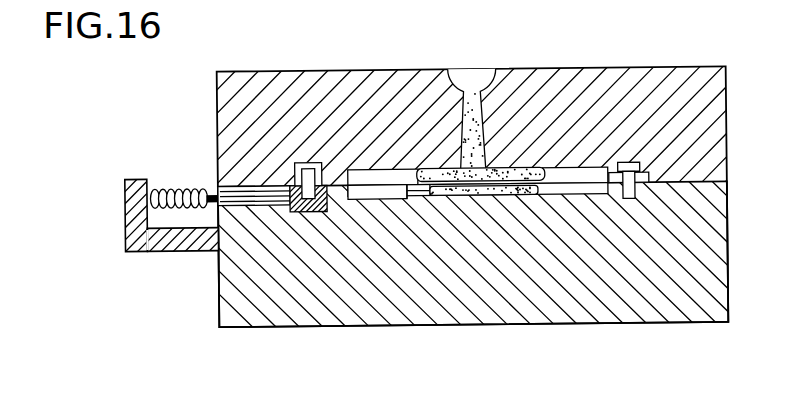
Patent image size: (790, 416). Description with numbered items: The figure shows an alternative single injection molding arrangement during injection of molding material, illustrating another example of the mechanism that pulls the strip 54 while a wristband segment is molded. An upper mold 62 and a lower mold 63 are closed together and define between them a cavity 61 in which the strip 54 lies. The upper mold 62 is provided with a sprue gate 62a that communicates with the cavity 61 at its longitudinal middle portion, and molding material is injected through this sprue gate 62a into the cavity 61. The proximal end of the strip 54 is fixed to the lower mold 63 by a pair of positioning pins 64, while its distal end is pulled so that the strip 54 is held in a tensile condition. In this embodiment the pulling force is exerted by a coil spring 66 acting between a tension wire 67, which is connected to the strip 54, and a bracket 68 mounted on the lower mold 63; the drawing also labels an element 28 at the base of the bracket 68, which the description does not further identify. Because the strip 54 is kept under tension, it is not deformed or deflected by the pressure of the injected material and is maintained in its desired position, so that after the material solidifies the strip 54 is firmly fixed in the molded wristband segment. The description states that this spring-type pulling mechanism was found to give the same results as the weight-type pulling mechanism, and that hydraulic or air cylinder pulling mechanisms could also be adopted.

The upper mold 62 is at (377, 92).
The sprue gate 62a is at (462, 122).
The lower mold 63 is at (530, 292).
The cavity 61 is at (367, 192).
The strip 54 is at (407, 192).
The positioning pins 64 is at (647, 200).
The coil spring 66 is at (175, 187).
The tension wire 67 is at (226, 184).
The bracket 68 is at (125, 233).
The base plate 28 is at (163, 252).